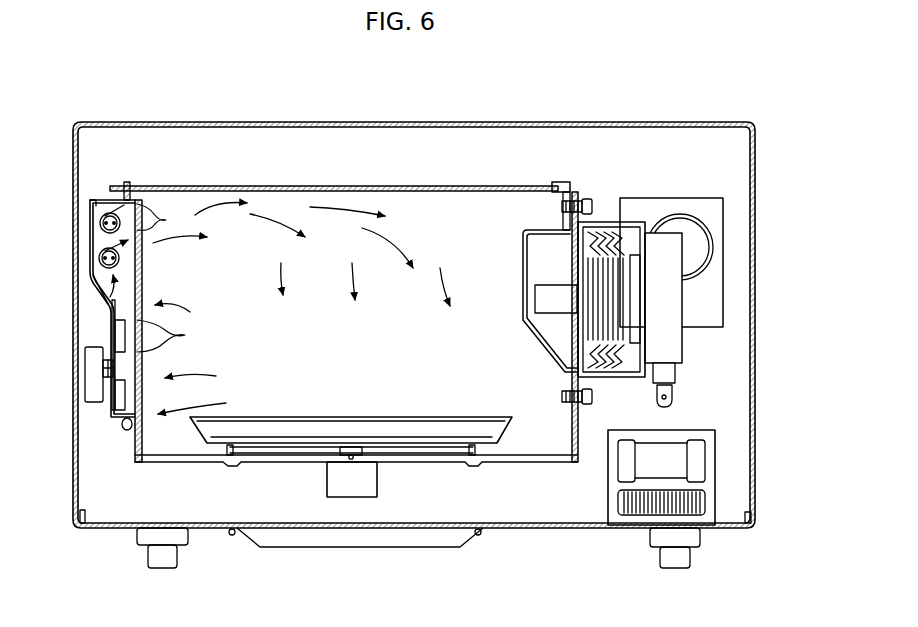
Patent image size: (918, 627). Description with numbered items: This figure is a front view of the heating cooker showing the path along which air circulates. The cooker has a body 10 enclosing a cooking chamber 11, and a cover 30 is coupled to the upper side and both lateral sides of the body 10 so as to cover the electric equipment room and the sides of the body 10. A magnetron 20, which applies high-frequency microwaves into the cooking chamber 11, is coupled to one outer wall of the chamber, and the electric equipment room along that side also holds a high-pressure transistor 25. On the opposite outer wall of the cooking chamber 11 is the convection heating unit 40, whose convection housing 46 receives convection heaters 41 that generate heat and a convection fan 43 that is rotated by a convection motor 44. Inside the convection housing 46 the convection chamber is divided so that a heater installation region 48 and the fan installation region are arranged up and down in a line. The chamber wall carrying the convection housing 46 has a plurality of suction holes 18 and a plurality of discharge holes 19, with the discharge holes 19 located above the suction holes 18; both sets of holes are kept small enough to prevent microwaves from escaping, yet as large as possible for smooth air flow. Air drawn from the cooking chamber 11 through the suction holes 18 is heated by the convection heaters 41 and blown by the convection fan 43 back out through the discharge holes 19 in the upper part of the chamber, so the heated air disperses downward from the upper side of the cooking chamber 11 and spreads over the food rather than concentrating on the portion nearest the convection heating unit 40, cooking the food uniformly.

The body 10 is at (608, 528).
The cooking chamber 11 is at (341, 352).
The suction holes 18 is at (172, 336).
The discharge holes 19 is at (163, 217).
The magnetron 20 is at (677, 312).
The high-pressure transistor 25 is at (712, 474).
The cover 30 is at (670, 122).
The convection heating unit 40 is at (69, 288).
The convection heaters 41 is at (100, 257).
The convection fan 43 is at (113, 398).
The convection motor 44 is at (94, 368).
The convection housing 46 is at (95, 200).
The heater installation region 48 is at (95, 278).